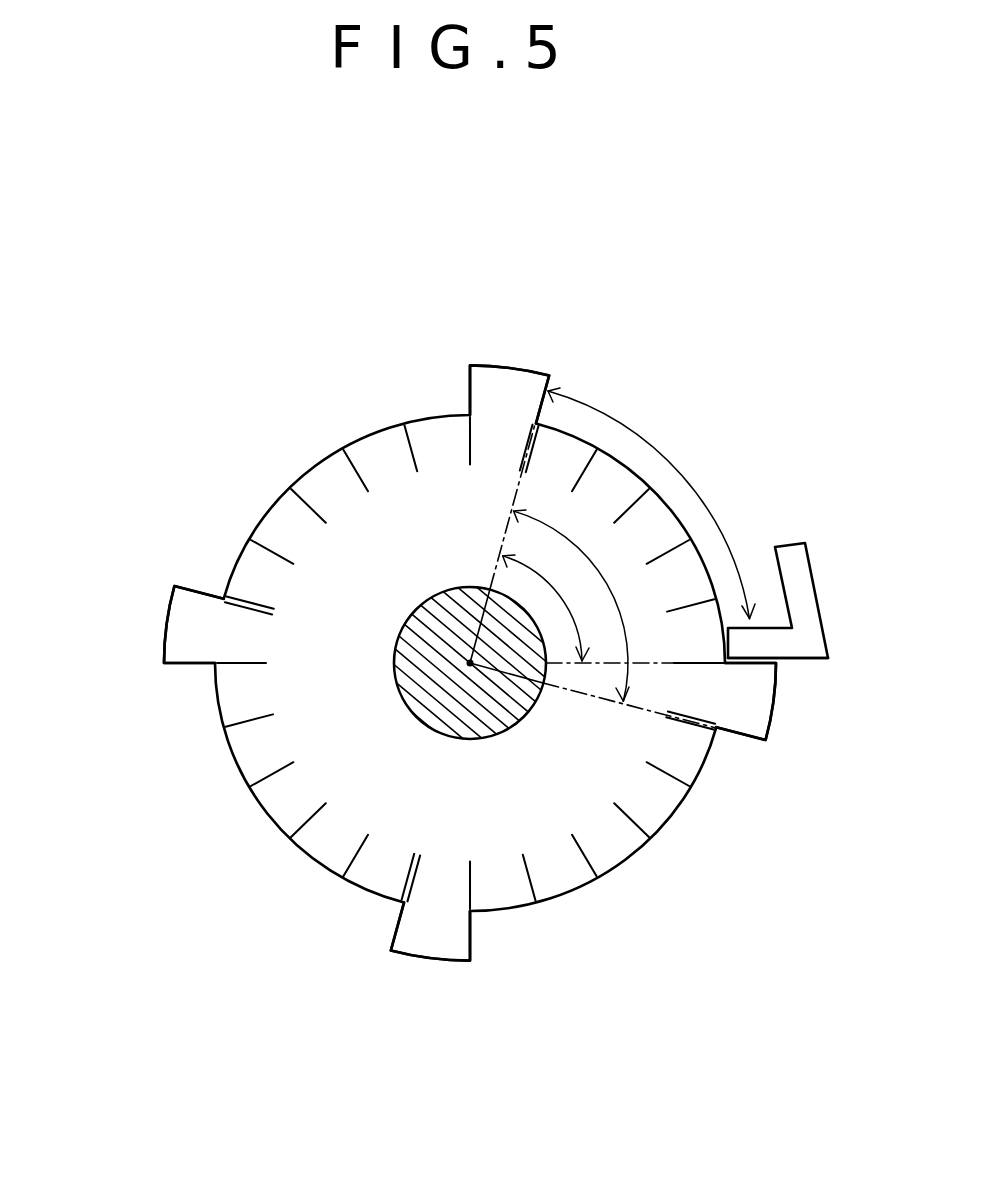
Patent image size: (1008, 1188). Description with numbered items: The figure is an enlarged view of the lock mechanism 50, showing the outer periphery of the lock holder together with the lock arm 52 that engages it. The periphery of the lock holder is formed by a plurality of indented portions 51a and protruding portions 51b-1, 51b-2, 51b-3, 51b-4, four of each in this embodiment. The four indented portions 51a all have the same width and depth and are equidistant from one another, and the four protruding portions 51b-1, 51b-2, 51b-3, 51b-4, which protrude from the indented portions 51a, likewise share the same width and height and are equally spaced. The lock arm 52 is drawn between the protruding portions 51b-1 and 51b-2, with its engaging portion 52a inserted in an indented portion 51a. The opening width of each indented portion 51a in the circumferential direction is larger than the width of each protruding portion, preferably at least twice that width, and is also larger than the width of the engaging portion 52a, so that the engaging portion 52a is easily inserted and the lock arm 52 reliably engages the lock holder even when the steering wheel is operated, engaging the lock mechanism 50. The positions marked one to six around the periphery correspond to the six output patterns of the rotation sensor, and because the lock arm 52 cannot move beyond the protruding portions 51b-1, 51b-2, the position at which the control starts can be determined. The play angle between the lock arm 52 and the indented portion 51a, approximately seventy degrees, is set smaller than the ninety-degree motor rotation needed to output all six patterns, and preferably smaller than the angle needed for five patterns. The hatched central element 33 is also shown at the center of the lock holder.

The lock mechanism 50 is at (660, 307).
The indented portion 51a is at (623, 462).
The protruding portion 51b-1 is at (511, 364).
The protruding portion 51b-2 is at (776, 701).
The protruding portion 51b-3 is at (428, 963).
The protruding portion 51b-4 is at (165, 624).
The lock arm 52 is at (807, 583).
The engaging portion 52a is at (791, 652).
The shaft 33 is at (430, 707).